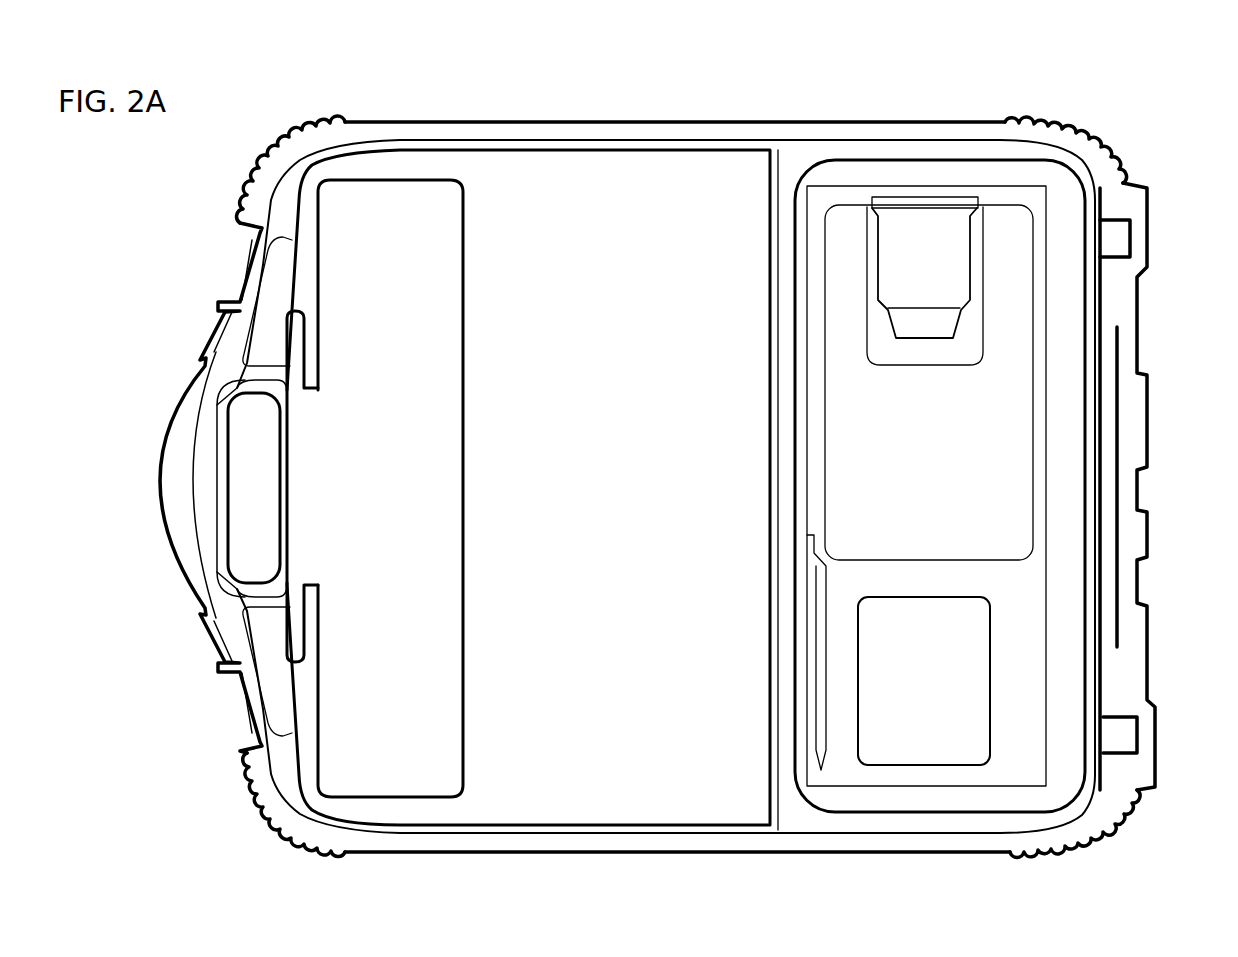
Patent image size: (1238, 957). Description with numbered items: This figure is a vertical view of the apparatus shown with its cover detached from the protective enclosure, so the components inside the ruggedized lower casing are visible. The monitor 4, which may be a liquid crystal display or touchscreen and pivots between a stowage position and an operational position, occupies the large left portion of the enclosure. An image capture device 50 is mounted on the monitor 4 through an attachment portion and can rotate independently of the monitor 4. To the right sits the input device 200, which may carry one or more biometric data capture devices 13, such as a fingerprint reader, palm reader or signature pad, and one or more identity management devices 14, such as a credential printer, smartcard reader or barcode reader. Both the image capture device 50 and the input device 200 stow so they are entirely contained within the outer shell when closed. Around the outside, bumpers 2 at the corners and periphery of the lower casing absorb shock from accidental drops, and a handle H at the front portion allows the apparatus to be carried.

The bumpers 2 is at (260, 160).
The monitor 4 is at (600, 803).
The biometric data capture device 13 is at (898, 237).
The identity management device 14 is at (878, 748).
The image capture device 50 is at (440, 472).
The input device 200 is at (1055, 540).
The handle H is at (212, 497).